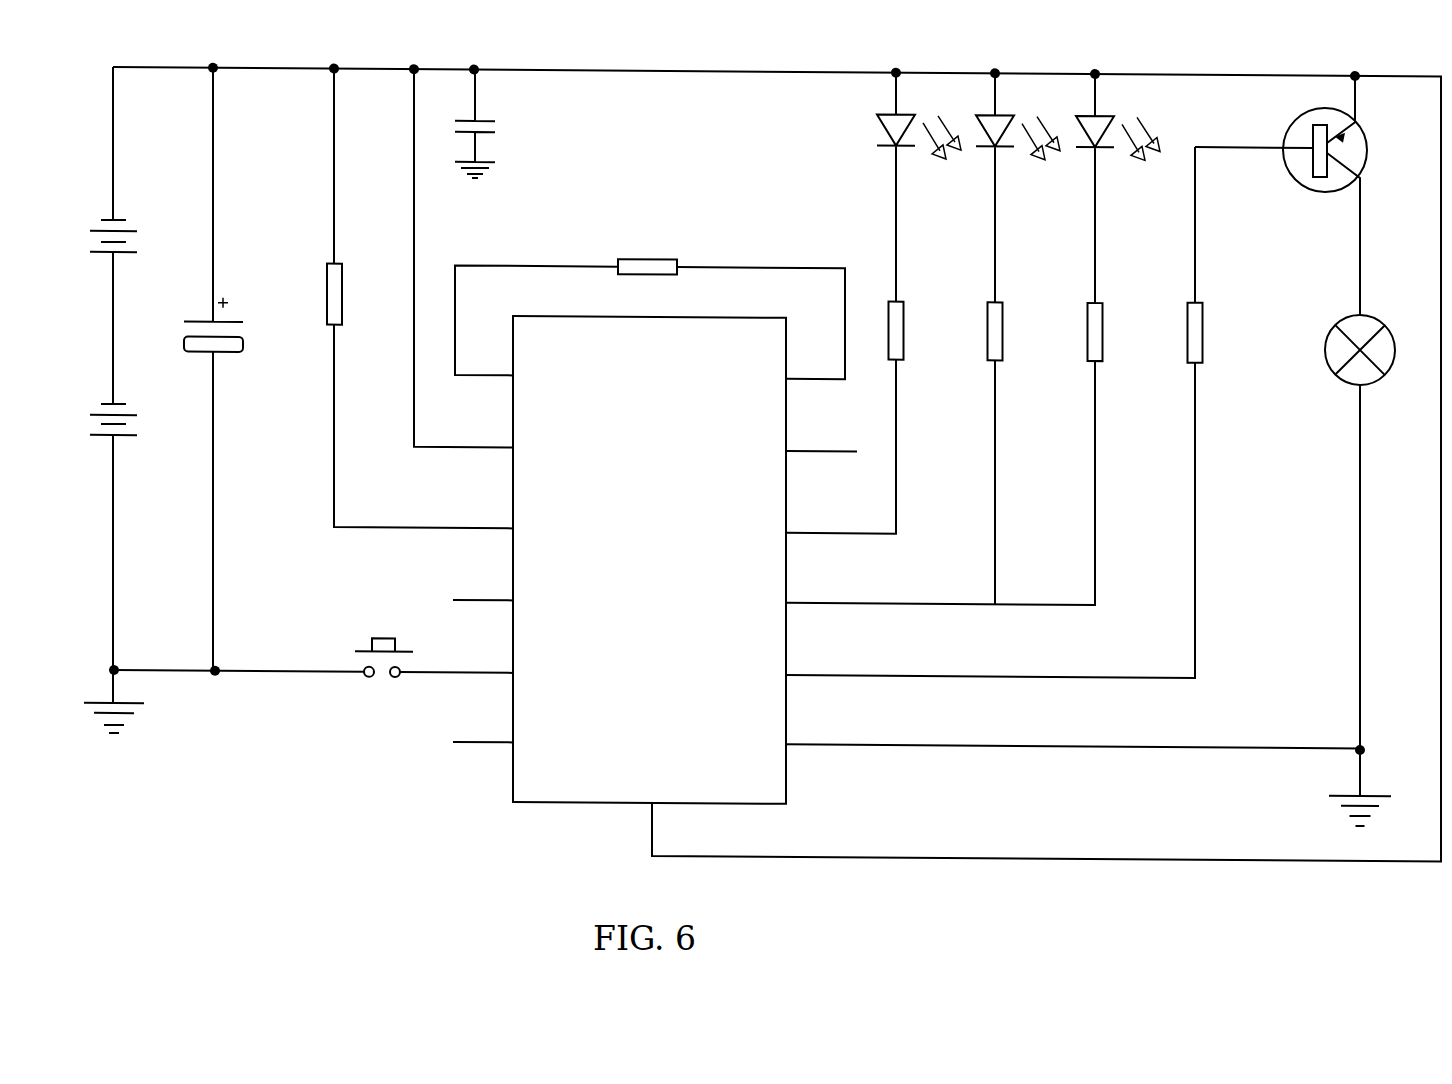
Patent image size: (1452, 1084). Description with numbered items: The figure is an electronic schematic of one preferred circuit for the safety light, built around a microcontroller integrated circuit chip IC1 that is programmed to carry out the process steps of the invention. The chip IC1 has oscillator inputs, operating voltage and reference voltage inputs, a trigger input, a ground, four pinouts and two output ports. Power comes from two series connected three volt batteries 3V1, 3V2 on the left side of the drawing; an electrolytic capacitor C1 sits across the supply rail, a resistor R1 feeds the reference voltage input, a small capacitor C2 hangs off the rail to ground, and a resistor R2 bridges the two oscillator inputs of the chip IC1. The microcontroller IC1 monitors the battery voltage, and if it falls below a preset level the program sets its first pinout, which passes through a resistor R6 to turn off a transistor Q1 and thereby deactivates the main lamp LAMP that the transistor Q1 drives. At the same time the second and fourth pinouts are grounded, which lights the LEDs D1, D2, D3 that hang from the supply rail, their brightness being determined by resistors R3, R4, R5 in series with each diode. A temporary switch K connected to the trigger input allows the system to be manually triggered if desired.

The electrolytic capacitor 100uF C1 is at (249, 370).
The capacitor 104 C2 is at (500, 129).
The resistor 24K R1 is at (420, 299).
The oscillator resistor 390K R2 is at (650, 290).
The resistor R3 is at (866, 417).
The resistor R4 is at (1021, 453).
The resistor R5 is at (969, 453).
The base resistor 200K R6 is at (1027, 411).
The LED D1 is at (919, 188).
The LED D2 is at (1018, 188).
The LED D3 is at (1118, 189).
The transistor Q1 is at (1281, 195).
The microcontroller integrated circuit chip IC1 is at (655, 602).
The temporary switch K is at (384, 646).
The lamp LAMP is at (1345, 556).
The 3V battery 3V1 is at (139, 203).
The 3V battery 3V2 is at (139, 386).